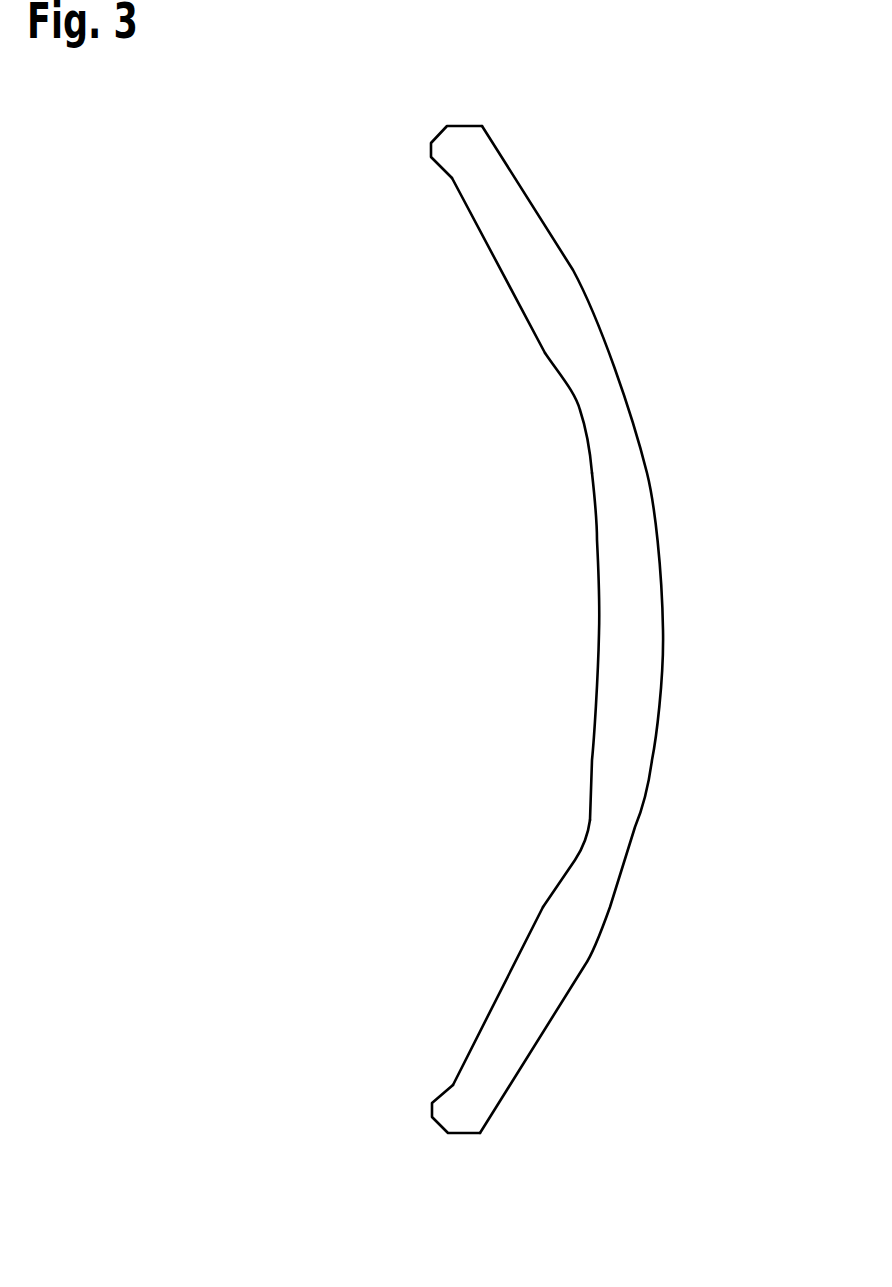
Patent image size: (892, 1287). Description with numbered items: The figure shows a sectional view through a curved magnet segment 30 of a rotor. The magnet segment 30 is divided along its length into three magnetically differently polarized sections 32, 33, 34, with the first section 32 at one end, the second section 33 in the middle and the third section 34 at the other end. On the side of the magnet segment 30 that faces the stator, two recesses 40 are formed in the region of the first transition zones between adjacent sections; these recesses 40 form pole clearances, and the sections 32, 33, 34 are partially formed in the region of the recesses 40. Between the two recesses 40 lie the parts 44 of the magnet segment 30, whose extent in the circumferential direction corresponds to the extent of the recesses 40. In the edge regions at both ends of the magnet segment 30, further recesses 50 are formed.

The magnet segment 30 is at (623, 183).
The first section 32 is at (508, 277).
The second section 33 is at (598, 628).
The third section 34 is at (513, 977).
The recesses 40 is at (580, 415).
The parts of the magnet segment 44 is at (550, 285).
The further recesses 50 is at (452, 178).